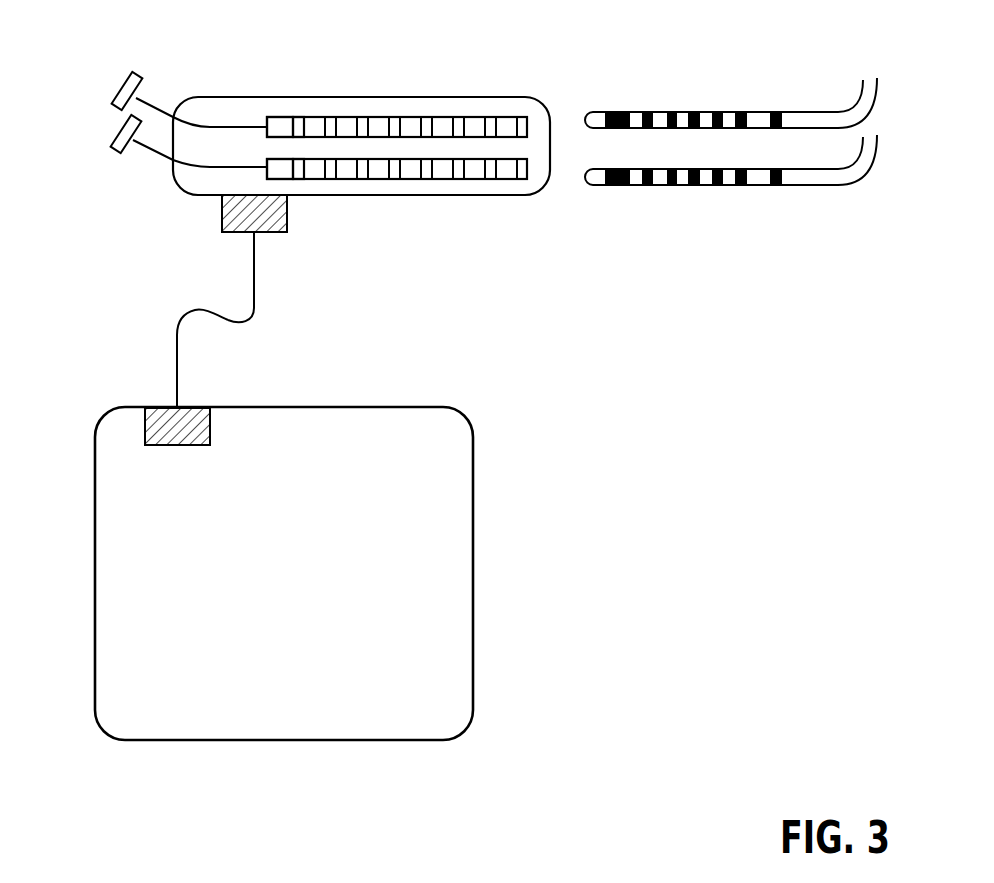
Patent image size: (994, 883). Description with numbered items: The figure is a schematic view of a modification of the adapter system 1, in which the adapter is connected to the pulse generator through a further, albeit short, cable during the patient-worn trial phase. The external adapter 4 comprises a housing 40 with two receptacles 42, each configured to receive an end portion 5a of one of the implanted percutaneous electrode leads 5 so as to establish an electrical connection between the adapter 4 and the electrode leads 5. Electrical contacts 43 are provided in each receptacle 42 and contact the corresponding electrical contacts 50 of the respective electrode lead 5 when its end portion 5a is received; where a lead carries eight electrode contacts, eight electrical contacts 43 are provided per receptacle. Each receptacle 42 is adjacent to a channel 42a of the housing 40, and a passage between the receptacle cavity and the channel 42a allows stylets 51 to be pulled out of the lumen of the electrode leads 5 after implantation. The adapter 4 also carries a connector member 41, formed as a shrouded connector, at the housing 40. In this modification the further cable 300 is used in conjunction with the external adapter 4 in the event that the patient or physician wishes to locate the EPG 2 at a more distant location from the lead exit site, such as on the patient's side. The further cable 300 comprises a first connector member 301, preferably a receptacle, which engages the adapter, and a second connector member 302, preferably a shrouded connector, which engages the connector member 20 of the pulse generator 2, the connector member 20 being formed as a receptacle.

The adapter system 1 is at (566, 471).
The pulse generator 2 is at (280, 616).
The connector member 20 is at (176, 446).
The further cable 300 is at (236, 320).
The first connector member 301 is at (254, 268).
The second connector member 302 is at (177, 369).
The external adapter 4 is at (304, 147).
The housing 40 is at (212, 110).
The connector member 41 is at (222, 216).
The receptacle 42 is at (406, 122).
The channel 42a is at (282, 122).
The electrical contacts 43 is at (390, 122).
The stylets 51 is at (119, 91).
The electrode lead 5 is at (731, 149).
The electrical contacts 50 is at (755, 113).
The end portion 5a is at (625, 113).